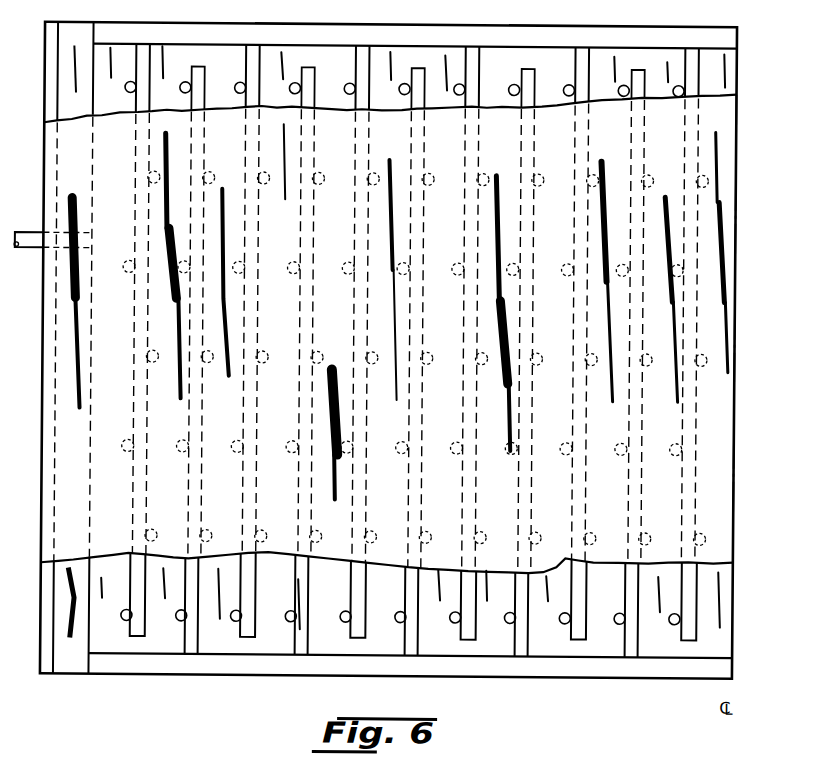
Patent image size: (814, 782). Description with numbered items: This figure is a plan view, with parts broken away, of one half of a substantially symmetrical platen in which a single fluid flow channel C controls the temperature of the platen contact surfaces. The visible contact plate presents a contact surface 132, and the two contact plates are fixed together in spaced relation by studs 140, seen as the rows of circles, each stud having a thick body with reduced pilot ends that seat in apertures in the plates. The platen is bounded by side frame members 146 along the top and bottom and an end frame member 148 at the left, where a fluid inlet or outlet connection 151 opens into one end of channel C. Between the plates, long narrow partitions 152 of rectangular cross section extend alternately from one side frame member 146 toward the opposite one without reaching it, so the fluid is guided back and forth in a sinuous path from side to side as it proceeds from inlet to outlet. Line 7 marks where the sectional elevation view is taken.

The side frame member 146 is at (354, 27).
The end frame member 148 is at (70, 665).
The contact surface 132 is at (508, 503).
The stud 140 is at (240, 83).
The partition 152 is at (464, 626).
The fluid inlet or outlet connection 151 is at (27, 240).
The section line 7— 7 is at (25, 593).
The fluid flow channel C is at (404, 607).